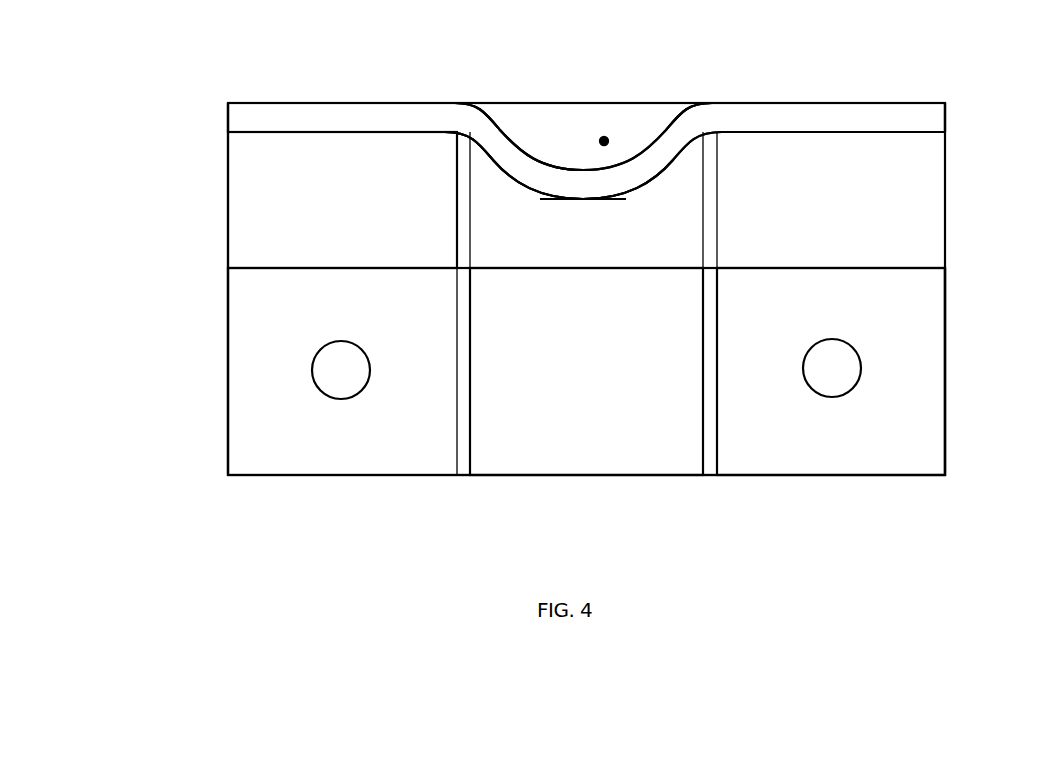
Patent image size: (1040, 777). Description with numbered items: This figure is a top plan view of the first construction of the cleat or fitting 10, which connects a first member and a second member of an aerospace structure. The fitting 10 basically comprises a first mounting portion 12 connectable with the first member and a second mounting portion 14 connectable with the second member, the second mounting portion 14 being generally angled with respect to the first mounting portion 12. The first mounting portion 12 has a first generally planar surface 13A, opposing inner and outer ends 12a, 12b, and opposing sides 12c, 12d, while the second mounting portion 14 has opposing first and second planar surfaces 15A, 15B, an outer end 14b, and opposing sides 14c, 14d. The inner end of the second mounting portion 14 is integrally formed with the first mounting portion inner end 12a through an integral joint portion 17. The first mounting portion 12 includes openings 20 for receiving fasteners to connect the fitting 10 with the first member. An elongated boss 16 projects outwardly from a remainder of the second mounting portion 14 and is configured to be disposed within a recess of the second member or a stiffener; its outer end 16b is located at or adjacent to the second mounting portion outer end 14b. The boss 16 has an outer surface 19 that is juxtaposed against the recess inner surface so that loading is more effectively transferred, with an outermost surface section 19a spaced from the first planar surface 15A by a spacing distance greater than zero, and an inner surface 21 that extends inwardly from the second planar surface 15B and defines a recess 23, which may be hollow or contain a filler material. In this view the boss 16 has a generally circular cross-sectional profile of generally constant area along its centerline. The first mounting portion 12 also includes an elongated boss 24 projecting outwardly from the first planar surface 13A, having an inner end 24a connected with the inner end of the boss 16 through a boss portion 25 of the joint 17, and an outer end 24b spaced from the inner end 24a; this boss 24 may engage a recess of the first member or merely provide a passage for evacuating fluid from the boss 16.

The fitting 10 is at (155, 323).
The first mounting portion 12 is at (344, 489).
The first mounting portion inner end 12a is at (907, 268).
The first mounting portion outer end 12b is at (832, 478).
The first mounting portion side 12c is at (947, 438).
The first mounting portion side 12d is at (228, 380).
The first planar surface 13A is at (932, 358).
The second mounting portion 14 is at (258, 84).
The second mounting portion outer end 14b is at (714, 115).
The second mounting portion side 14c is at (945, 113).
The second mounting portion side 14d is at (228, 115).
The first planar surface 15A is at (910, 133).
The second planar surface 15B is at (823, 102).
The elongated boss 16 is at (574, 93).
The boss outer end 16b is at (638, 195).
The joint portion 17 is at (245, 210).
The boss outer surface 19 is at (508, 203).
The outermost surface section 19a is at (580, 199).
The opening 20 is at (362, 340).
The boss inner surface 21 is at (507, 124).
The recess 23 is at (604, 138).
The first mounting portion boss 24 is at (648, 358).
The boss inner end 24a is at (670, 268).
The boss outer end 24b is at (585, 478).
The boss portion 25 is at (690, 185).